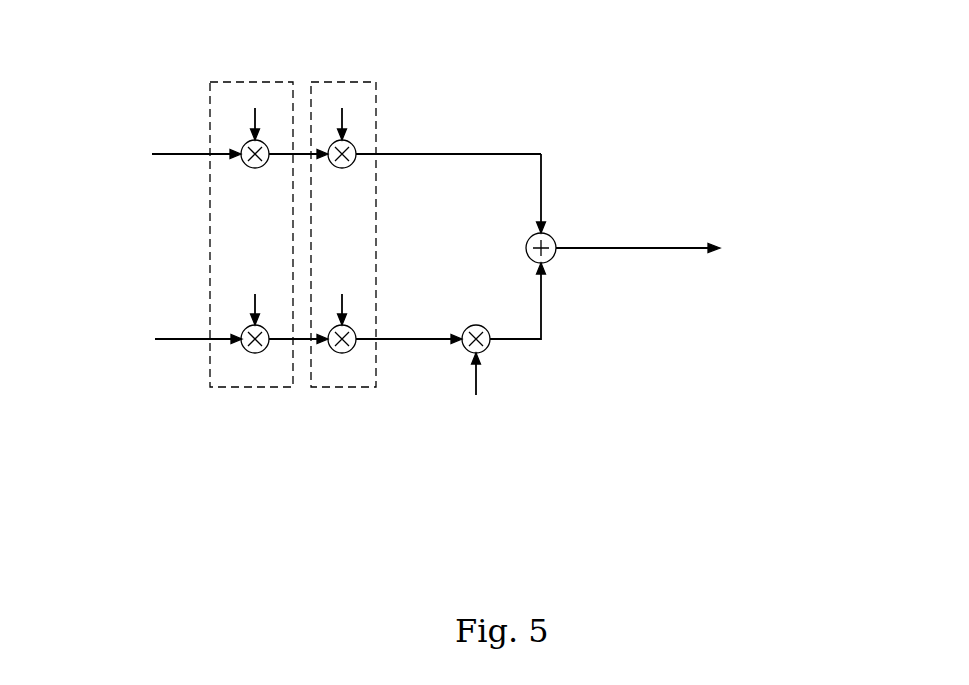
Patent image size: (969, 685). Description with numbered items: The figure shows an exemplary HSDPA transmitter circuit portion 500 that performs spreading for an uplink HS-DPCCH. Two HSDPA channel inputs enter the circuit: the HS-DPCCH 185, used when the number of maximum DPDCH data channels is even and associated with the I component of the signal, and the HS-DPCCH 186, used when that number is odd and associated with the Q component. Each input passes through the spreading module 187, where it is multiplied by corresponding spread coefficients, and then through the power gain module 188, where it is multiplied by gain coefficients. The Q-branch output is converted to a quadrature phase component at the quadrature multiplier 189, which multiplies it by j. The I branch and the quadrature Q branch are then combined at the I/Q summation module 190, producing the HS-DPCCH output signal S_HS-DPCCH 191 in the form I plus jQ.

The HS-DPCCH channel input 185 is at (127, 108).
The HS-DPCCH channel input 186 is at (95, 321).
The spreading module 187 is at (259, 82).
The power gain module 188 is at (343, 82).
The quadrature multiplier 189 is at (492, 353).
The I/Q summation module 190 is at (558, 207).
The HS-DPCCH signal S_HS-DPCCH 191 is at (659, 305).
The HSDPA transmitter circuit portion 500 is at (307, 464).